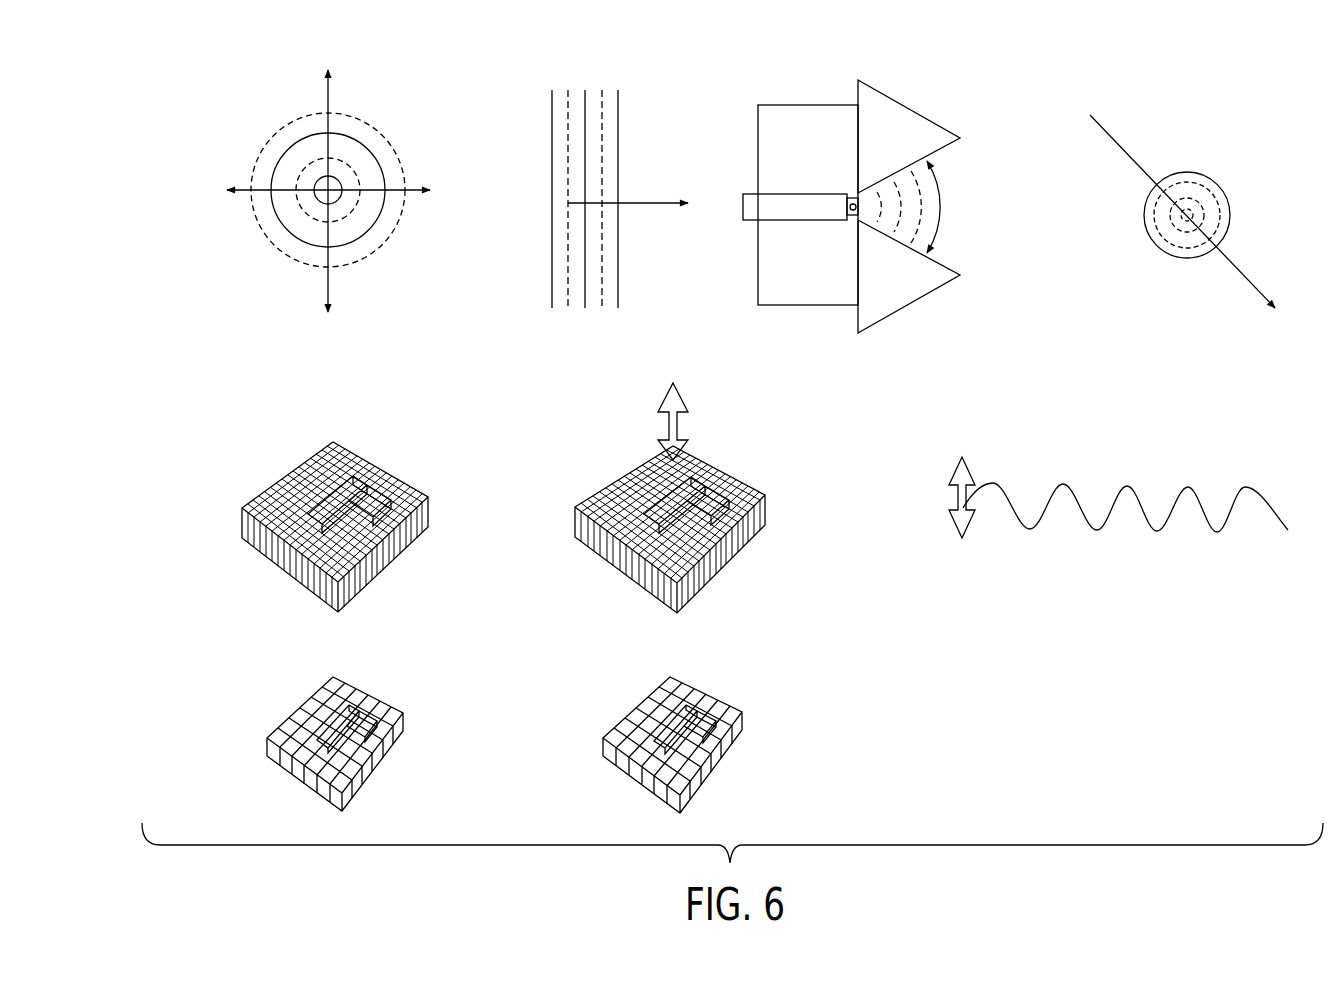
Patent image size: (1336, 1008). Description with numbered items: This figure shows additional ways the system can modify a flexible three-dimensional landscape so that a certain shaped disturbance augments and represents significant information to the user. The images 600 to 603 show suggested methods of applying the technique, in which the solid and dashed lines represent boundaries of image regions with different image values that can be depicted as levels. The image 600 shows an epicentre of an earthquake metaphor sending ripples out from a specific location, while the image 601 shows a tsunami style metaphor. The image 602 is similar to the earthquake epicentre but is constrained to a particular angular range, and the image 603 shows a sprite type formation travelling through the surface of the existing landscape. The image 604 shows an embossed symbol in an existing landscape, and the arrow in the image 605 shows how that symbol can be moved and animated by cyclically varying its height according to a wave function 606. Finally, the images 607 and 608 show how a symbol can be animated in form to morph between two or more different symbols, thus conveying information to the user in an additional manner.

The earthquake epicentre image 600 is at (278, 100).
The tsunami metaphor image 601 is at (533, 97).
The angularly constrained ripple image 602 is at (830, 88).
The sprite formation image 603 is at (1120, 102).
The embossed symbol image 604 is at (268, 445).
The animated symbol image 605 is at (622, 433).
The wave function 606 is at (1072, 445).
The morphing symbol image 607 is at (277, 688).
The morphing symbol image 608 is at (617, 690).